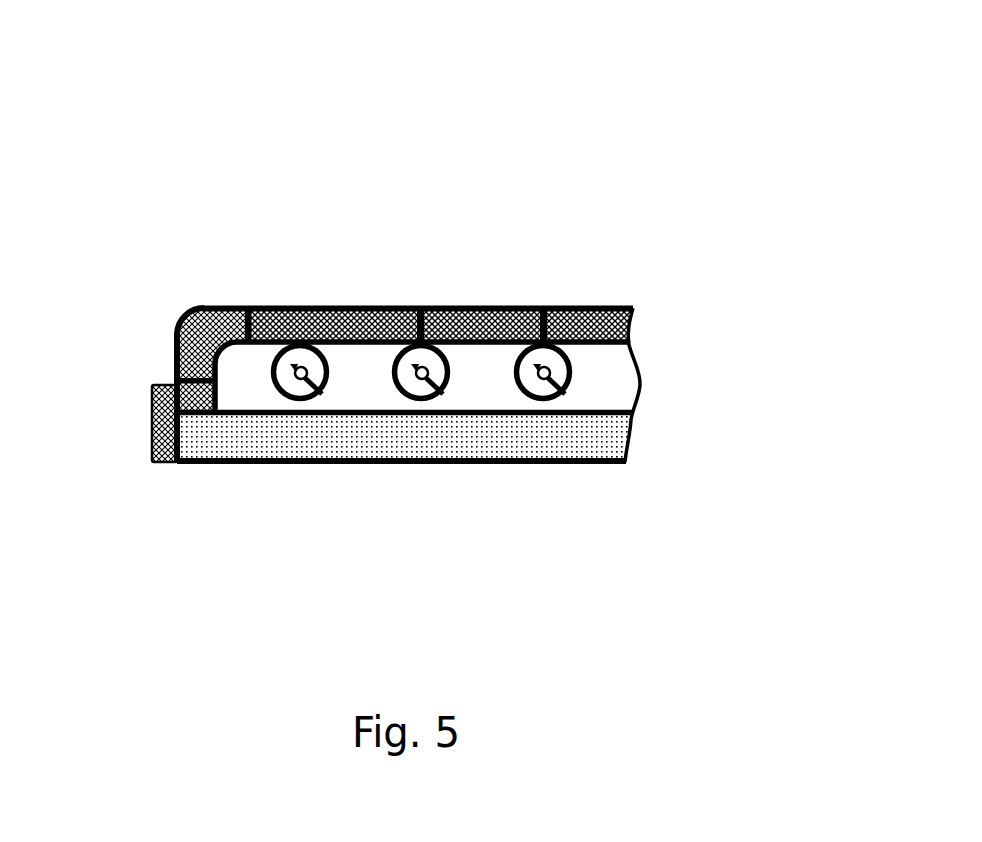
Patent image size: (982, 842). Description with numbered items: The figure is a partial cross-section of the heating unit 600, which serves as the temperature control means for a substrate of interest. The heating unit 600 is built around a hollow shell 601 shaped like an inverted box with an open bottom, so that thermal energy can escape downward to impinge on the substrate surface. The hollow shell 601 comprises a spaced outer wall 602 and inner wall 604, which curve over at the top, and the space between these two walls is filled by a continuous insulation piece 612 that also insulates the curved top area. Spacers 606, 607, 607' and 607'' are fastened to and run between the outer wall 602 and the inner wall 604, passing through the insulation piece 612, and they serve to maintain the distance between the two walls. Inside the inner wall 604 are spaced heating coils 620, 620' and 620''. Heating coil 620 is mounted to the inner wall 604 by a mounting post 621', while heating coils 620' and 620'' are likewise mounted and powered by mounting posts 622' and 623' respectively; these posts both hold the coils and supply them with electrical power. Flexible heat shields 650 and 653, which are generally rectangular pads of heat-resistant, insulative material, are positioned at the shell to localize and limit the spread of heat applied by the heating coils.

The heating unit 600 is at (145, 133).
The hollow shell 601 is at (166, 318).
The outer wall 602 is at (390, 309).
The inner wall 604 is at (623, 309).
The spacer 606 is at (177, 381).
The spacer 607 is at (203, 269).
The spacer 607' is at (509, 213).
The spacer 607'' is at (623, 217).
The continuous insulation piece 612 is at (353, 309).
The heating coil 620 is at (260, 480).
The heating coil 620' is at (571, 470).
The heating coil 620'' is at (693, 424).
The mounting post 621' is at (366, 463).
The mounting post 622' is at (490, 460).
The mounting post 623' is at (673, 361).
The flexible heat shield 650 is at (152, 437).
The flexible heat shield 653 is at (215, 450).